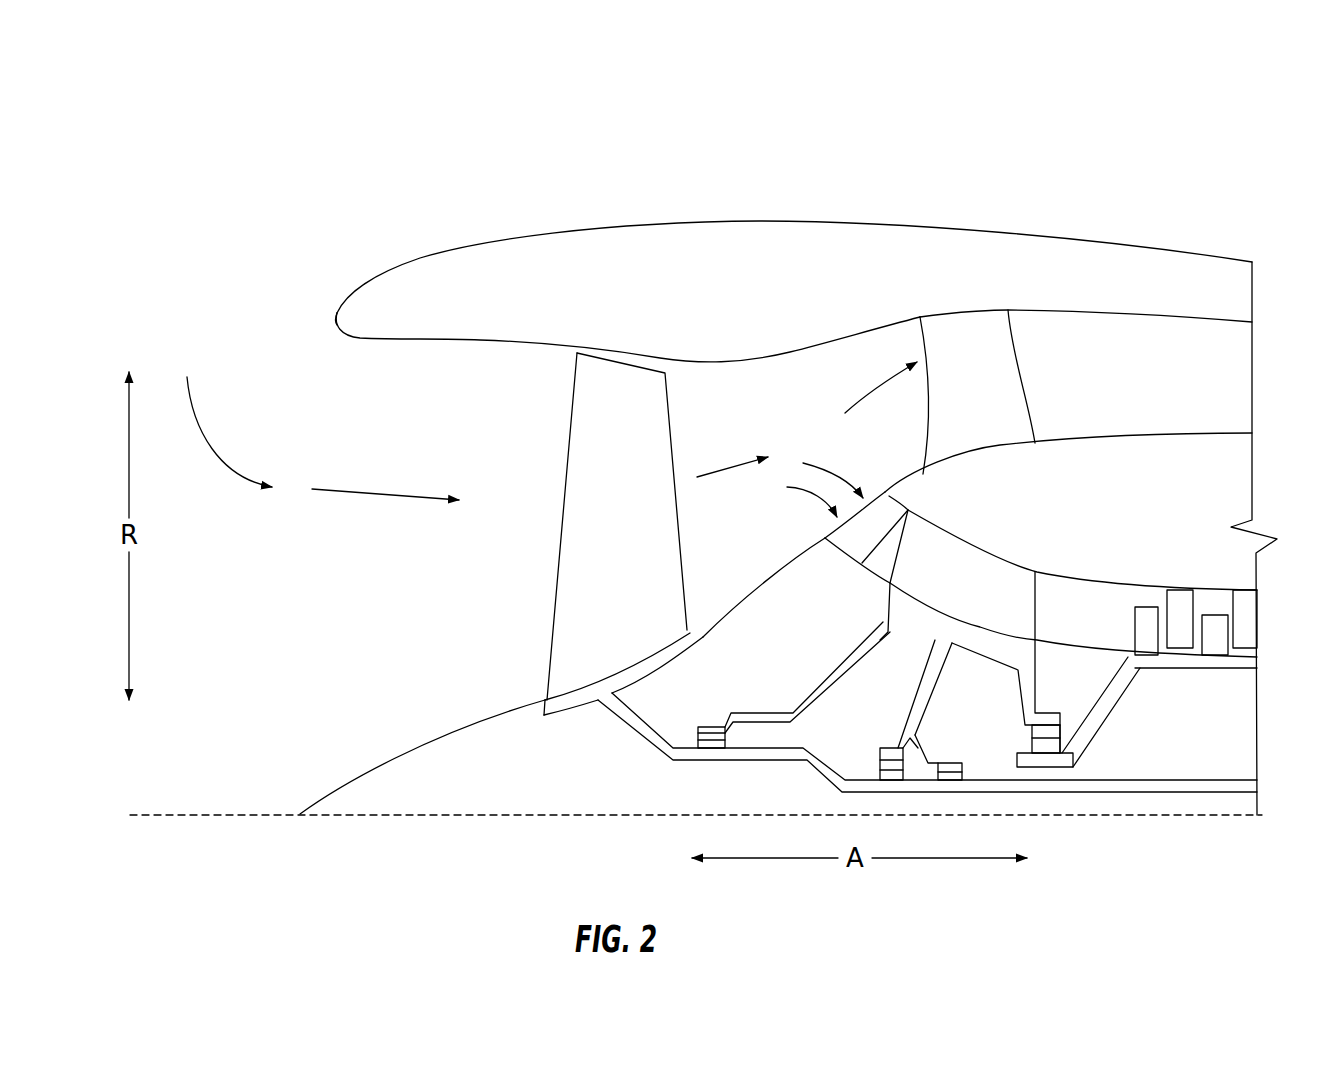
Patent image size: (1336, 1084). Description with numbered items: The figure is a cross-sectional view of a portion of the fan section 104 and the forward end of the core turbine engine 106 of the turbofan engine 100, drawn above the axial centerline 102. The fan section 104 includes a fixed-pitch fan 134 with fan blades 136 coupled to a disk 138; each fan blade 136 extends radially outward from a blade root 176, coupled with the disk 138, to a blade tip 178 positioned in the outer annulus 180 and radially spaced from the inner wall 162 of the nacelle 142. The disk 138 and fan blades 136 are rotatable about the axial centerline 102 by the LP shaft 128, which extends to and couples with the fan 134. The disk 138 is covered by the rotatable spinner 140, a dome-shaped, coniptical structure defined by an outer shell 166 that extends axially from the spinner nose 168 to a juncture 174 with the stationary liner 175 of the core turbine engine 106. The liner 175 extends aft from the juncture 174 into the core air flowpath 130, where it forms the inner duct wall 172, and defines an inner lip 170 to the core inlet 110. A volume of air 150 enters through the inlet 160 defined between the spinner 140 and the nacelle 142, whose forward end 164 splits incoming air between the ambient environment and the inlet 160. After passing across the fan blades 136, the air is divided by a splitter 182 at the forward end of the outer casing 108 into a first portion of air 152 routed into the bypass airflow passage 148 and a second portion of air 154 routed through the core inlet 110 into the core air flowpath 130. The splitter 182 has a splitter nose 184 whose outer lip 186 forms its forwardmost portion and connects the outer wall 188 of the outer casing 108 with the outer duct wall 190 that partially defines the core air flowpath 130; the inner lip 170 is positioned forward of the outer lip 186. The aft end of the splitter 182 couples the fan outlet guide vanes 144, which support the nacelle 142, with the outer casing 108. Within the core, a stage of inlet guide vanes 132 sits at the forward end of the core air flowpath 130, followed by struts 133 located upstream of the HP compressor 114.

The turbofan engine 100 is at (328, 152).
The axial centerline 102 is at (452, 816).
The fan section 104 is at (582, 188).
The core turbine engine 106 is at (1088, 570).
The outer casing 108 is at (1143, 475).
The core inlet 110 is at (790, 493).
The HP compressor 114 is at (1210, 583).
The LP shaft 128 is at (823, 782).
The core air flowpath 130 is at (1032, 607).
The inlet guide vanes 132 is at (867, 542).
The struts 133 is at (1008, 585).
The fan 134 is at (524, 619).
The fan blades 136 is at (603, 595).
The disk 138 is at (570, 712).
The spinner 140 is at (380, 759).
The nacelle 142 is at (650, 304).
The fan outlet guide vanes 144 is at (950, 352).
The bypass airflow passage 148 is at (1156, 377).
The volume of air 150 is at (356, 501).
The first portion of air 152 is at (883, 378).
The second portion of air 154 is at (833, 467).
The inlet 160 is at (192, 417).
The inner wall 162 is at (413, 342).
The forward end 164 is at (337, 318).
The outer shell 166 is at (428, 737).
The spinner nose 168 is at (300, 814).
The inner lip 170 is at (827, 537).
The inner duct wall 172 is at (930, 590).
The juncture 174 is at (692, 627).
The liner 175 is at (762, 567).
The blade root 176 is at (537, 696).
The blade tip 178 is at (567, 350).
The outer annulus 180 is at (760, 387).
The splitter 182 is at (953, 450).
The splitter nose 184 is at (887, 483).
The outer lip 186 is at (880, 494).
The outer wall 188 is at (1105, 437).
The outer duct wall 190 is at (918, 528).